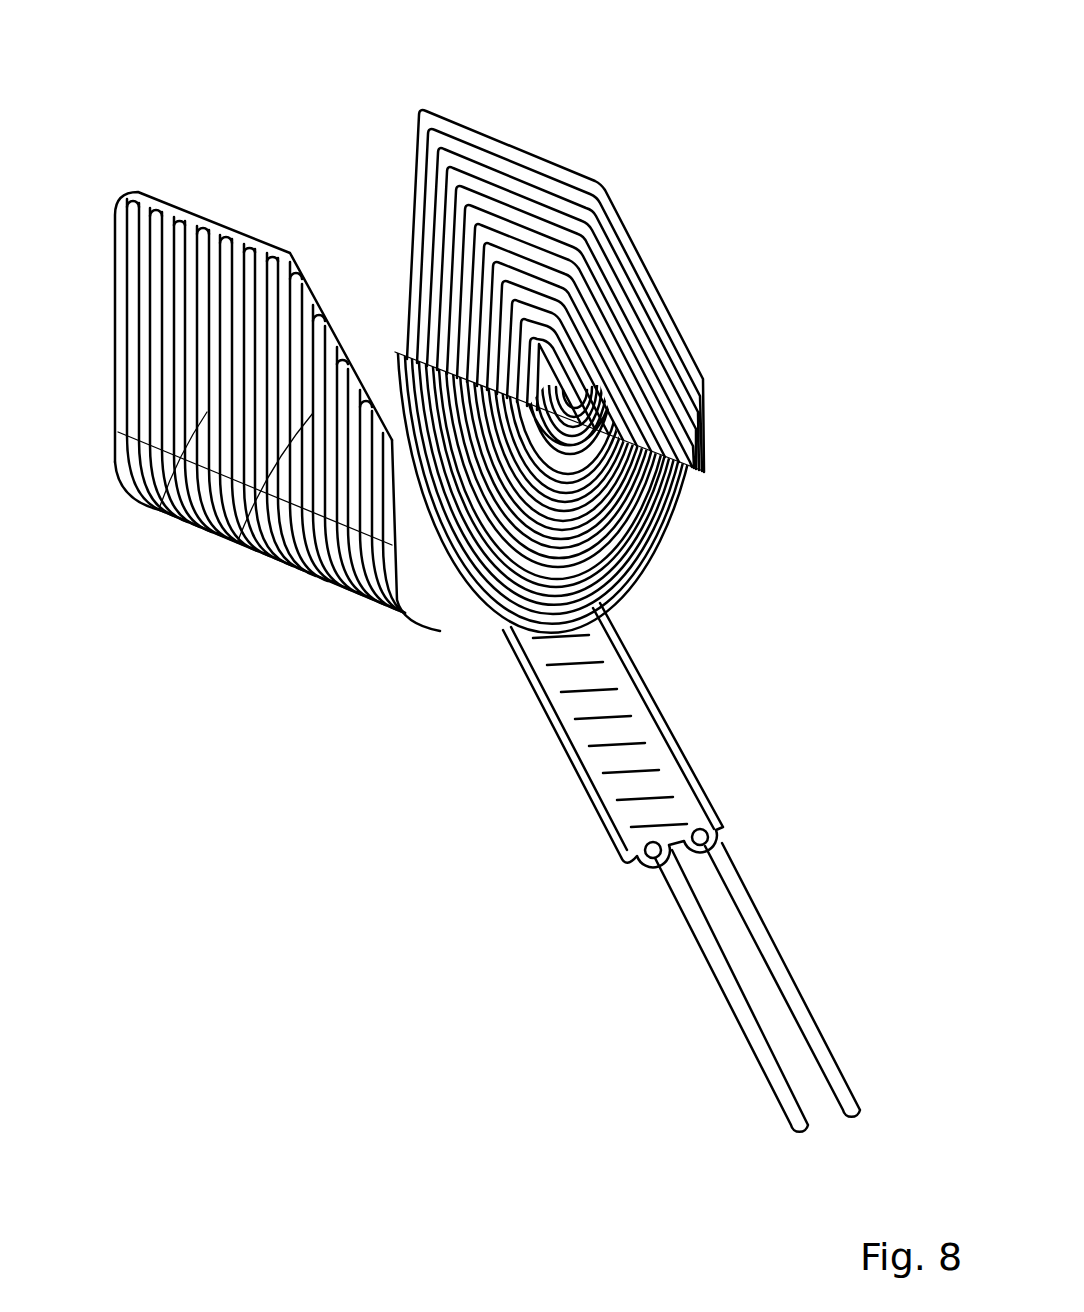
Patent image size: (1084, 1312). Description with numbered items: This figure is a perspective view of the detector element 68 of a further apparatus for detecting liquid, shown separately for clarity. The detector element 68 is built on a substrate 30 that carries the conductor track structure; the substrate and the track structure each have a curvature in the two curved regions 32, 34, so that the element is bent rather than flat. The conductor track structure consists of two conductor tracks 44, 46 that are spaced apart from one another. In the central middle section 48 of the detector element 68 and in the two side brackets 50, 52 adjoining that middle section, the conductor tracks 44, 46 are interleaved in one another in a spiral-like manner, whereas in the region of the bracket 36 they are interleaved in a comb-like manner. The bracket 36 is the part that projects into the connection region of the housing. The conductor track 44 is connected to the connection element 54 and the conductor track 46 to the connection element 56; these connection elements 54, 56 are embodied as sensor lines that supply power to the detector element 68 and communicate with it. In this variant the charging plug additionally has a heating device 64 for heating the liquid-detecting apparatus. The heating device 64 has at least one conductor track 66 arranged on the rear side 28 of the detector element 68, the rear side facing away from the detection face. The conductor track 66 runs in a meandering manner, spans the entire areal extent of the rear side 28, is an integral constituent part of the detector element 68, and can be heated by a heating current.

The detector element 68 is at (128, 108).
The side bracket 52 is at (183, 213).
The side bracket 50 is at (600, 183).
The central middle section 48 is at (673, 550).
The region of curvature 34 is at (682, 552).
The conductor track 66 is at (157, 513).
The heating device 64 is at (203, 533).
The rear side 28 is at (237, 543).
The region of curvature 32 is at (438, 630).
The conductor track 46 is at (793, 662).
The conductor track 44 is at (680, 731).
The bracket 36 is at (581, 782).
The substrate 30 is at (560, 747).
The connection element 54 is at (765, 940).
The connection element 56 is at (757, 1067).